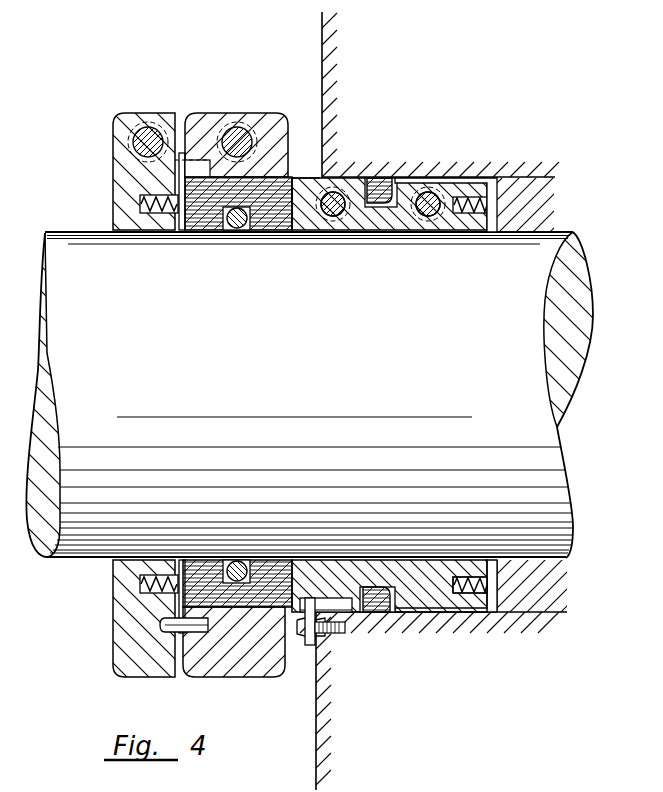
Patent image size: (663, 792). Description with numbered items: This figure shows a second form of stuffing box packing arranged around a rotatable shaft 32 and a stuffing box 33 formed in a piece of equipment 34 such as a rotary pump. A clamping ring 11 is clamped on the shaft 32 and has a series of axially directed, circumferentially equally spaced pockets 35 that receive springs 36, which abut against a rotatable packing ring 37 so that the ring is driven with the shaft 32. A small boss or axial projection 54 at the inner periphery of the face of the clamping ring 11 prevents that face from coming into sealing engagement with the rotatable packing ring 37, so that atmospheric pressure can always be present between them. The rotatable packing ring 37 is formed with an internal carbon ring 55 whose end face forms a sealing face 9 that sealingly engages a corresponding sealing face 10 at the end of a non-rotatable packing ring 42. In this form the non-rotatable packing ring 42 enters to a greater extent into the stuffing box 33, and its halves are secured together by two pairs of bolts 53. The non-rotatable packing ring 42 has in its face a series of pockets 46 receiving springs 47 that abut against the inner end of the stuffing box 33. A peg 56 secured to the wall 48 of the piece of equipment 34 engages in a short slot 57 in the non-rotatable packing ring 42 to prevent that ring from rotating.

The sealing face 9 is at (282, 207).
The sealing face 10 is at (293, 214).
The clamping ring 11 is at (117, 118).
The rotatable shaft 32 is at (578, 267).
The stuffing box 33 is at (447, 178).
The piece of equipment 34 is at (352, 47).
The pockets 35 is at (125, 597).
The springs 36 is at (139, 584).
The rotatable packing ring 37 is at (270, 117).
The non-rotatable packing ring 42 is at (391, 220).
The pockets 46 is at (467, 595).
The springs 47 is at (492, 590).
The wall 48 is at (315, 694).
The bolts 53 is at (428, 216).
The boss or axial projection 54 is at (185, 234).
The carbon ring 55 is at (214, 221).
The peg 56 is at (308, 646).
The slot 57 is at (342, 603).